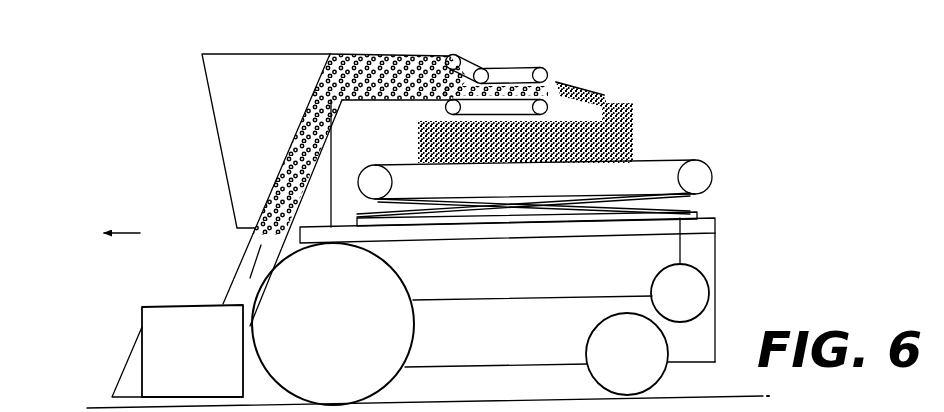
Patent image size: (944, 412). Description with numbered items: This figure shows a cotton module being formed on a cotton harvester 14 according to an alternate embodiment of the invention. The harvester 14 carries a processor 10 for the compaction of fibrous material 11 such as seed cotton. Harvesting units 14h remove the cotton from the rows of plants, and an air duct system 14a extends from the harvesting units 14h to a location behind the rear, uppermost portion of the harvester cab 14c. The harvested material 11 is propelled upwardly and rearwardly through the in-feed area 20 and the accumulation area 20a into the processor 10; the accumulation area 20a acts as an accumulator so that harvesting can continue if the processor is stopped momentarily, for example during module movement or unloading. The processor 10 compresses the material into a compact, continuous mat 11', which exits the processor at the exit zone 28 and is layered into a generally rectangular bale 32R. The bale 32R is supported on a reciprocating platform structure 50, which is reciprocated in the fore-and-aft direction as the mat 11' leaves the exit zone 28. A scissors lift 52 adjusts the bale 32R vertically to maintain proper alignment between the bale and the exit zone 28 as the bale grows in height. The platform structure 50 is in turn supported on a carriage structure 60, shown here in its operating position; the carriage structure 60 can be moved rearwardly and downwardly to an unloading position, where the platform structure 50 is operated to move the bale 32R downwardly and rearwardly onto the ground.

The processor 10 is at (543, 54).
The fibrous material 11 is at (360, 126).
The compact continuous mat 11' is at (549, 75).
The cotton harvester 14 is at (167, 136).
The air duct system 14a is at (241, 258).
The harvester cab 14c is at (250, 53).
The harvesting units 14h is at (163, 306).
The in-feed area 20 is at (430, 72).
The accumulation area 20a is at (384, 75).
The exit zone 28 is at (588, 78).
The rectangular bale 32R is at (633, 128).
The reciprocating platform structure 50 is at (726, 145).
The scissors lift 52 is at (689, 212).
The carriage structure 60 is at (688, 255).